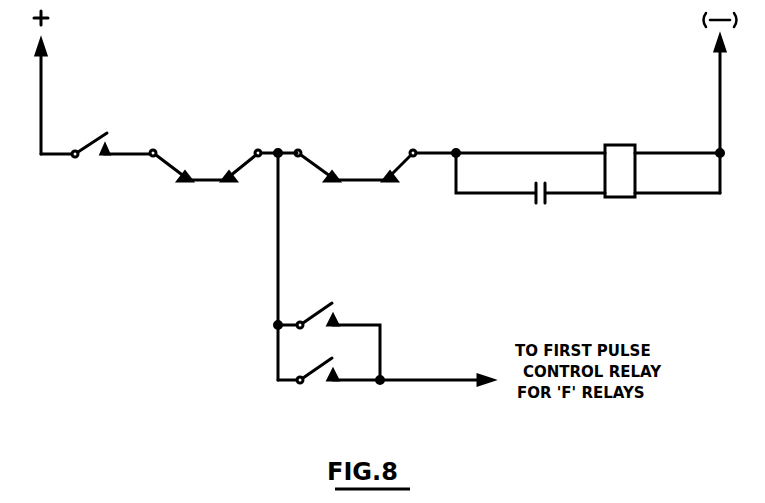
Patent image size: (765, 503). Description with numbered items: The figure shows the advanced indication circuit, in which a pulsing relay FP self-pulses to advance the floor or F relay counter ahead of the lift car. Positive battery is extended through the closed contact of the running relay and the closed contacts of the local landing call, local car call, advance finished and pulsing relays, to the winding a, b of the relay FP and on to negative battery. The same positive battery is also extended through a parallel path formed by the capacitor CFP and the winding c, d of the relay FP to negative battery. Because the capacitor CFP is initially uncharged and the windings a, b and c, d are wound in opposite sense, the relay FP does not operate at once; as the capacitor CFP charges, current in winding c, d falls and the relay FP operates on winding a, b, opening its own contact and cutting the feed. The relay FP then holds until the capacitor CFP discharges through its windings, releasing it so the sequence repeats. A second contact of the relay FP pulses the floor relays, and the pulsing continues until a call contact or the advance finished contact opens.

The pulsing relay FP is at (617, 157).
The capacitor CFP is at (538, 183).
The winding terminal a of relay FP a is at (586, 146).
The winding terminal b of relay FP b is at (645, 145).
The winding terminal c of relay FP c is at (593, 203).
The winding terminal d of relay FP d is at (649, 203).